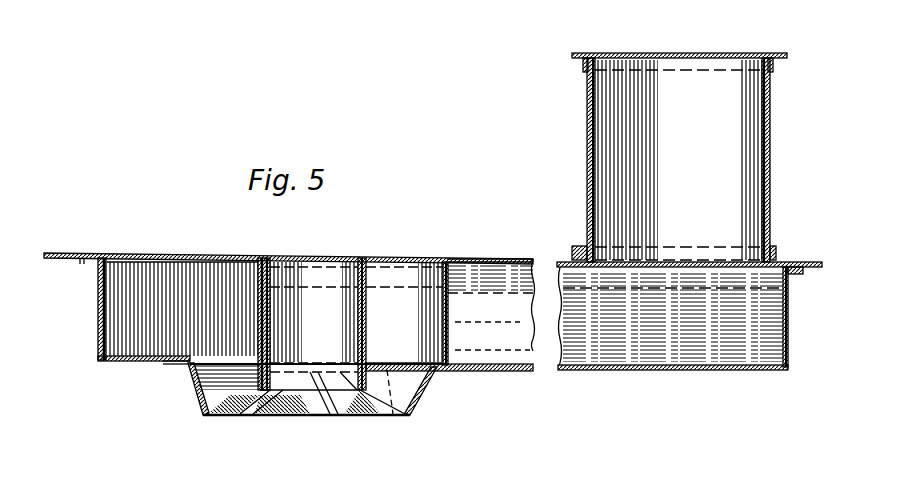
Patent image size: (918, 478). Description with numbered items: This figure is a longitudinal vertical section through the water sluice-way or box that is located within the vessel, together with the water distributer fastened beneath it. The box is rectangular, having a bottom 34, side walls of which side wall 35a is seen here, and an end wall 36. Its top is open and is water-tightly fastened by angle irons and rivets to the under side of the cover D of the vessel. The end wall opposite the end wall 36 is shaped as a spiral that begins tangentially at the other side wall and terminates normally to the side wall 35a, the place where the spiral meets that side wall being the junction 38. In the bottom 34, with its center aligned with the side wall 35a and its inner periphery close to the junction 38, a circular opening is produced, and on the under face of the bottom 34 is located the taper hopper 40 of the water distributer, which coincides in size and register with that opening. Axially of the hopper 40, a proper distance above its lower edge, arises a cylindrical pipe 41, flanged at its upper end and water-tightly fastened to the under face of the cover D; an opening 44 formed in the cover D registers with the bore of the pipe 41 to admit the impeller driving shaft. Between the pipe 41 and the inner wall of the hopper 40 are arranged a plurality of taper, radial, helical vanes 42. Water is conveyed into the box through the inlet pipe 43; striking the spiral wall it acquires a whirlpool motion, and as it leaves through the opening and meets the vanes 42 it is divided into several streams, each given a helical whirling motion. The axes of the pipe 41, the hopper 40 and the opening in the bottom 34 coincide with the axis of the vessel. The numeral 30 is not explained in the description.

The first compartment 30 is at (199, 356).
The bottom 34 is at (600, 365).
The side wall 35a is at (491, 305).
The end wall 36 is at (781, 340).
The junction 38 is at (440, 316).
The taper hopper 40 is at (199, 394).
The cylindrical pipe 41 is at (318, 324).
The helical vanes 42 is at (205, 408).
The inlet pipe 43 is at (679, 157).
The opening 44 is at (325, 258).
The cover D is at (471, 258).